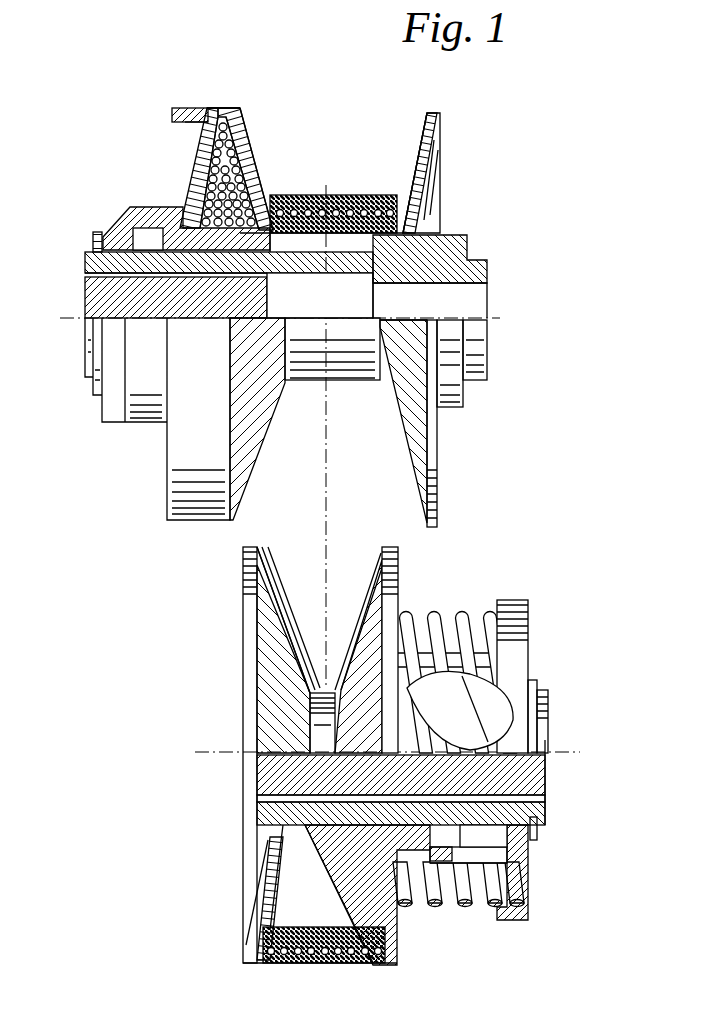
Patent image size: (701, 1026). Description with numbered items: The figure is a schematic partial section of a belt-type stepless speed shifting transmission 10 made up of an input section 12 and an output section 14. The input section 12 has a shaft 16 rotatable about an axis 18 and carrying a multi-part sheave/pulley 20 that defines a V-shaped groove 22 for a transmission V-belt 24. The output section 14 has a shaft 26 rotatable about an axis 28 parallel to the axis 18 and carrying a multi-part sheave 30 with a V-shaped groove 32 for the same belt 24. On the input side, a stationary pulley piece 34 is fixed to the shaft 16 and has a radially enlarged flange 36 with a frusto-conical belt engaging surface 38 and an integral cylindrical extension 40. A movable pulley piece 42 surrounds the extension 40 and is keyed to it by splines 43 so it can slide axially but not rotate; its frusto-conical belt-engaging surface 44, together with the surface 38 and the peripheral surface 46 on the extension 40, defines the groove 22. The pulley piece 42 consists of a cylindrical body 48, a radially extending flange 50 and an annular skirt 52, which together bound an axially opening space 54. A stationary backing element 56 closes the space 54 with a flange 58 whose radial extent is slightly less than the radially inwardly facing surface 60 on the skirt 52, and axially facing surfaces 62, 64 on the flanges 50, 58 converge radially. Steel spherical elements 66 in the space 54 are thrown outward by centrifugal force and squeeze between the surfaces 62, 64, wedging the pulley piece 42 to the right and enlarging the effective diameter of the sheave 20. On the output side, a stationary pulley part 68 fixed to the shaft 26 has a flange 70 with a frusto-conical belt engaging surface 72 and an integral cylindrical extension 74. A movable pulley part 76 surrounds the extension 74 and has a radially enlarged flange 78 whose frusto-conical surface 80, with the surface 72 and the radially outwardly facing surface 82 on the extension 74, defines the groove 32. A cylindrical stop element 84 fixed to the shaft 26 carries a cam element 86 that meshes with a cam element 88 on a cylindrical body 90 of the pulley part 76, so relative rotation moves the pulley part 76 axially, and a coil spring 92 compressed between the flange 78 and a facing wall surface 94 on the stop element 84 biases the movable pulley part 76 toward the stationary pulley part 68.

The belt-type stepless speed shifting transmission 10 is at (493, 178).
The input section 12 is at (447, 458).
The output section 14 is at (213, 836).
The shaft 16 is at (93, 307).
The axis 18 is at (497, 318).
The multi-part sheave/pulley 20 is at (404, 172).
The V-shaped groove 22 is at (313, 116).
The transmission V-belt 24 is at (318, 195).
The shaft 26 is at (505, 805).
The axis 28 is at (196, 752).
The multi-part sheave 30 is at (379, 562).
The V-shaped groove 32 is at (268, 540).
The stationary sheave/pulley piece 34 is at (441, 113).
The radially enlarged flange 36 is at (433, 428).
The frusto-conical belt engaging surface 38 is at (395, 446).
The cylindrical extension 40 is at (157, 263).
The movable pulley piece 42 is at (236, 108).
The splines 43 is at (137, 256).
The frusto-conical belt-engaging surface 44 is at (243, 150).
The peripheral surface 46 is at (320, 250).
The cylindrical body 48 is at (137, 212).
The radially extending flange 50 is at (247, 112).
The annular skirt 52 is at (200, 107).
The axially opening space 54 is at (232, 222).
The stationary backing element 56 is at (125, 222).
The flange 58 is at (207, 140).
The radially inwardly facing surface 60 is at (187, 121).
The axially facing surface 62 is at (298, 216).
The axially facing surface 64 is at (207, 227).
The spherical elements 66 is at (205, 160).
The stationary pulley part 68 is at (268, 657).
The flange 70 is at (278, 878).
The frusto-conical belt engaging surface 72 is at (282, 610).
The cylindrical extension 74 is at (520, 776).
The movable pulley part 76 is at (394, 603).
The radially enlarged flange 78 is at (400, 935).
The belt engaging frusto-conical surface 80 is at (357, 627).
The radially outwardly facing surface 82 is at (320, 830).
The stop element 84 is at (526, 860).
The cam element 86 is at (487, 693).
The cam element 88 is at (443, 613).
The cylindrical body 90 is at (417, 850).
The coil spring 92 is at (500, 605).
The facing wall surface 94 is at (513, 870).